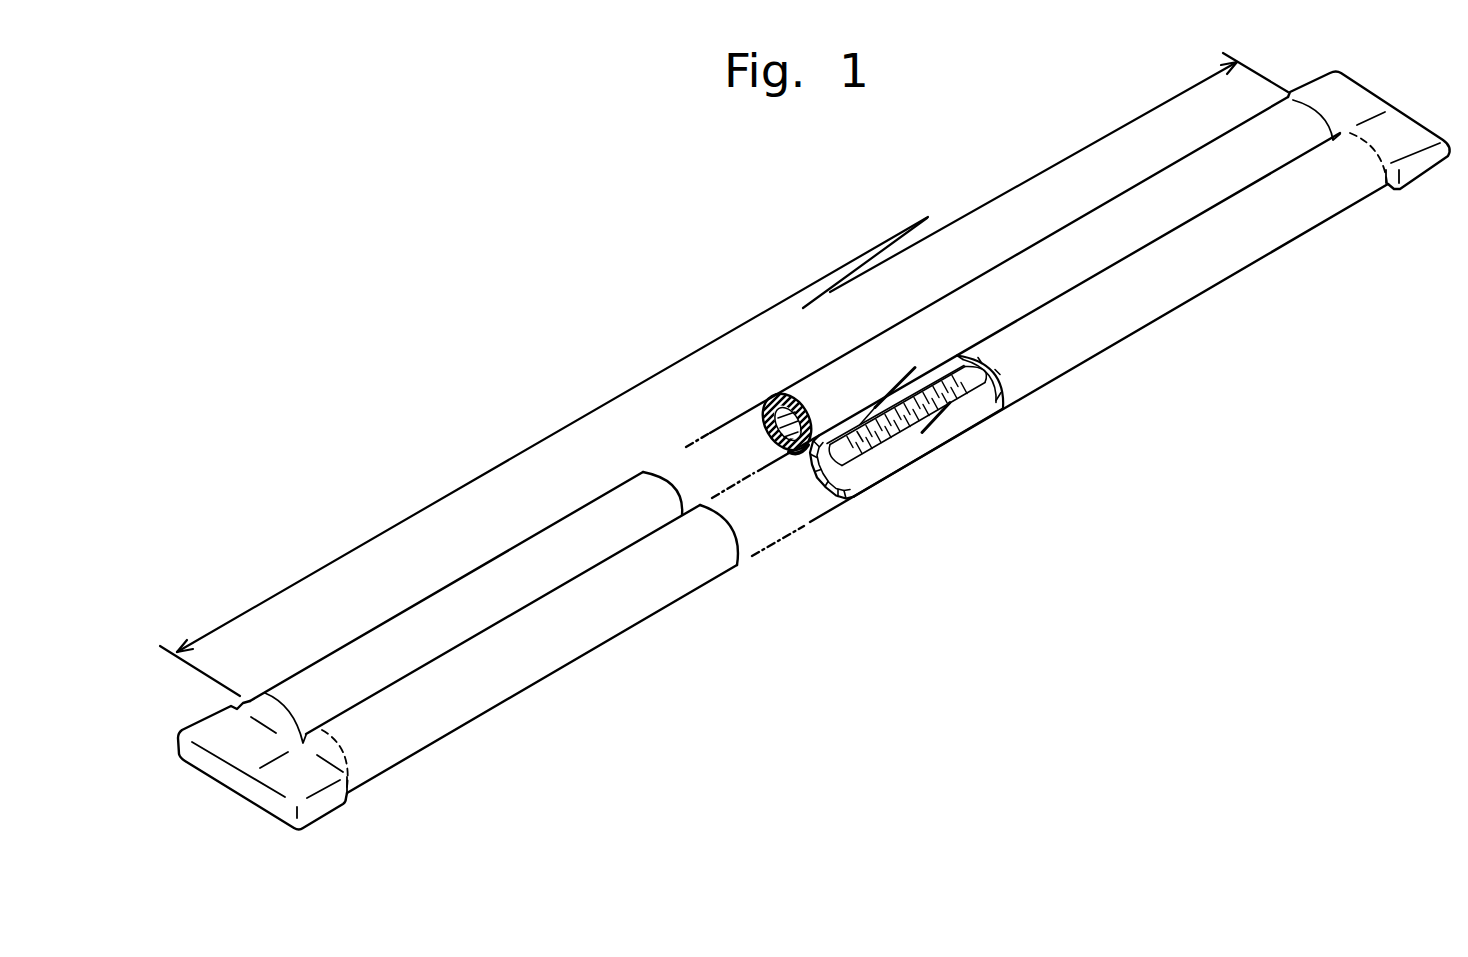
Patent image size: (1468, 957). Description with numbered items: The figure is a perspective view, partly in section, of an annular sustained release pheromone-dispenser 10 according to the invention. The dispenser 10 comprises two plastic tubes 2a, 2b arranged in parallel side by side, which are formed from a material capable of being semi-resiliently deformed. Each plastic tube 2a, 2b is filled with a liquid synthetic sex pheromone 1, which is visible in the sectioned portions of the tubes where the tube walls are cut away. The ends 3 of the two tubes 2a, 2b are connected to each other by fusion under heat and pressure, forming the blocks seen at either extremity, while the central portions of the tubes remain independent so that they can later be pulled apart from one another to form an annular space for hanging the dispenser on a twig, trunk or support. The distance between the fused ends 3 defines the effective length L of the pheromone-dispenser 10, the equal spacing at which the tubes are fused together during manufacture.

The liquid synthetic sex pheromone 1 is at (764, 441).
The plastic tube 2a is at (482, 595).
The plastic tube 2b is at (1222, 252).
The ends 3 is at (349, 807).
The annular sustained release pheromone-dispenser 10 is at (814, 426).
The effective length L is at (724, 374).